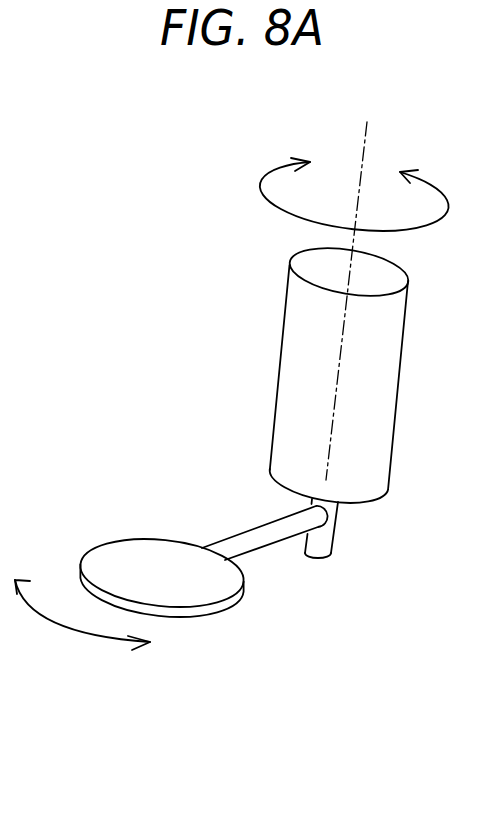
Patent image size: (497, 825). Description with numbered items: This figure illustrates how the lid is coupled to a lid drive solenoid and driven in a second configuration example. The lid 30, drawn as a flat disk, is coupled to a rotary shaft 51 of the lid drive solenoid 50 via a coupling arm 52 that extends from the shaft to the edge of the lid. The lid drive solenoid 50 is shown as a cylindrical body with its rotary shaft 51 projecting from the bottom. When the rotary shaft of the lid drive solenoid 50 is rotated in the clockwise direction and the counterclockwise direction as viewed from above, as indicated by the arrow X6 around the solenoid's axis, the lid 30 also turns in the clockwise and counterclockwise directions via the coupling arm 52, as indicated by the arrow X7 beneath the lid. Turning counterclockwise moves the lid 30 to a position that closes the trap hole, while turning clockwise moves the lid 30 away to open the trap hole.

The lid 30 is at (128, 558).
The lid drive solenoid 50 is at (312, 333).
The rotary shaft 51 is at (320, 538).
The coupling arm 52 is at (252, 537).
The arrow x6 X6 is at (282, 171).
The arrow x7 X7 is at (75, 630).